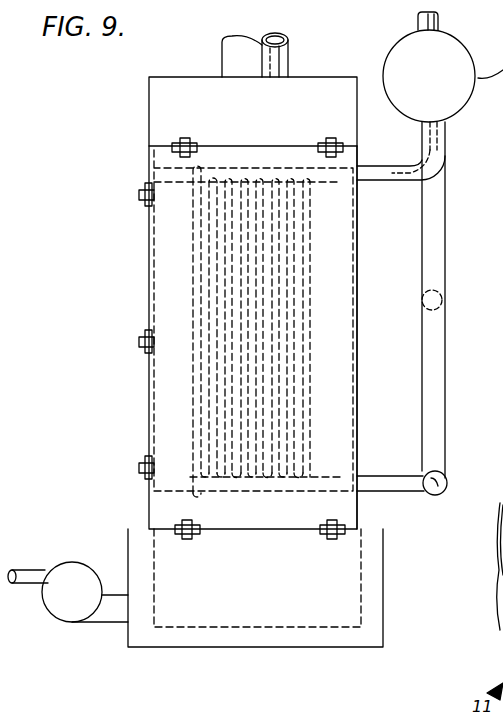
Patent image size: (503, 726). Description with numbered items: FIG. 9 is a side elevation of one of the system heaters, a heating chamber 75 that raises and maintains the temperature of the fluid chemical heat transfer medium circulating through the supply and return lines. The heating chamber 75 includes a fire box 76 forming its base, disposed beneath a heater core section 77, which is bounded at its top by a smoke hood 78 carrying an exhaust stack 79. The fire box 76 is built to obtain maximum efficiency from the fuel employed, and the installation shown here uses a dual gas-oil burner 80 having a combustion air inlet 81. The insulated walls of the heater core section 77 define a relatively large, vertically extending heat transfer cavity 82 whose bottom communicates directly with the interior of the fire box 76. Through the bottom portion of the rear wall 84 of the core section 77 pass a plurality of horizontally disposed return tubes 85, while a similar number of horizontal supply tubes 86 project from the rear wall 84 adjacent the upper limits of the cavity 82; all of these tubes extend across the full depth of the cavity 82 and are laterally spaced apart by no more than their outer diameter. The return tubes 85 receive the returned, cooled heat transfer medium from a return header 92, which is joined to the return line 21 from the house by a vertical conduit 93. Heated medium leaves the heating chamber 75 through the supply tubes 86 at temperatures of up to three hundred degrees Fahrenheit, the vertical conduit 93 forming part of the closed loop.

The return line 21 is at (440, 294).
The heating chamber 75 is at (148, 236).
The fire box 76 is at (278, 610).
The heater core section 77 is at (183, 380).
The smoke hood 78 is at (160, 106).
The exhaust stack 79 is at (272, 60).
The dual gas-oil burner 80 is at (72, 578).
The combustion air inlet 81 is at (32, 578).
The heat transfer cavity 82 is at (290, 440).
The rear wall 84 is at (357, 312).
The return tubes 85 is at (394, 483).
The supply tubes 86 is at (385, 166).
The return header 92 is at (441, 475).
The vertical conduit 93 is at (432, 365).